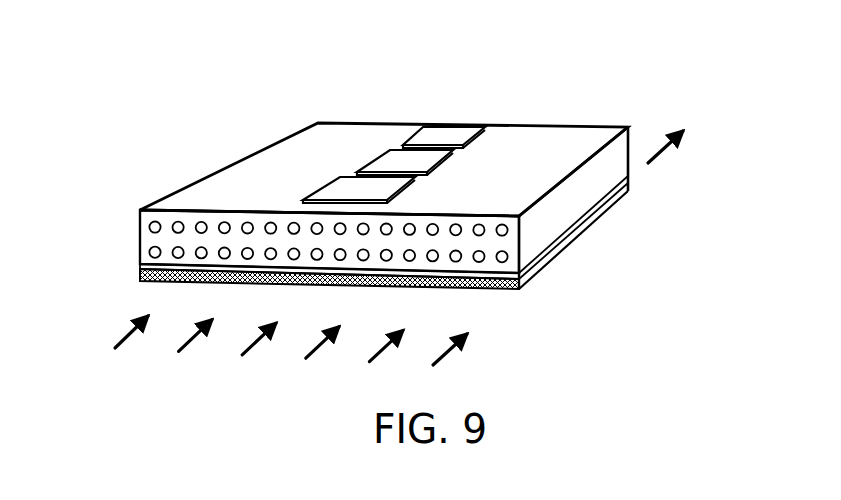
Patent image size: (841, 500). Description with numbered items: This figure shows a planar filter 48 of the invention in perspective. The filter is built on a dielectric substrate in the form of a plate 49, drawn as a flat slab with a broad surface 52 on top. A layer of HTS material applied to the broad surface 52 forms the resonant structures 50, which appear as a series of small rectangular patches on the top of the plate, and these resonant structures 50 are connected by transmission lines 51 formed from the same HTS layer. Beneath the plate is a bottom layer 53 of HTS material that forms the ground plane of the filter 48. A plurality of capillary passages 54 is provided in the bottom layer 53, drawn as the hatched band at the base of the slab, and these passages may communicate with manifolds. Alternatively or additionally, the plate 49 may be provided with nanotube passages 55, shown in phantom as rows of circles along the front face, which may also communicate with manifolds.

The planar filter 48 is at (530, 85).
The plate 49 is at (593, 182).
The resonant structures 50 is at (447, 136).
The transmission lines 51 is at (337, 205).
The broad surface 52 is at (567, 137).
The bottom layer 53 is at (567, 241).
The capillary passages 54 is at (513, 290).
The nanotube passages 55 is at (149, 252).